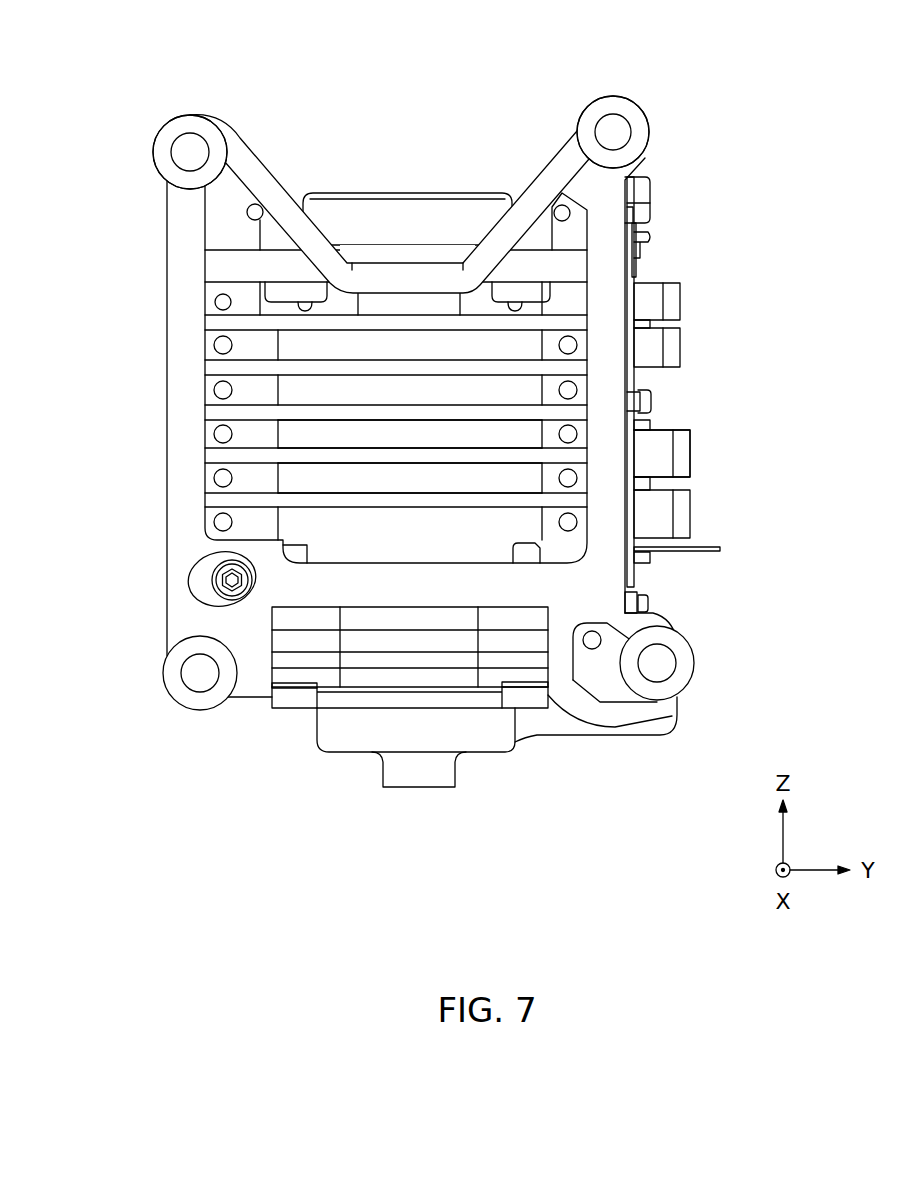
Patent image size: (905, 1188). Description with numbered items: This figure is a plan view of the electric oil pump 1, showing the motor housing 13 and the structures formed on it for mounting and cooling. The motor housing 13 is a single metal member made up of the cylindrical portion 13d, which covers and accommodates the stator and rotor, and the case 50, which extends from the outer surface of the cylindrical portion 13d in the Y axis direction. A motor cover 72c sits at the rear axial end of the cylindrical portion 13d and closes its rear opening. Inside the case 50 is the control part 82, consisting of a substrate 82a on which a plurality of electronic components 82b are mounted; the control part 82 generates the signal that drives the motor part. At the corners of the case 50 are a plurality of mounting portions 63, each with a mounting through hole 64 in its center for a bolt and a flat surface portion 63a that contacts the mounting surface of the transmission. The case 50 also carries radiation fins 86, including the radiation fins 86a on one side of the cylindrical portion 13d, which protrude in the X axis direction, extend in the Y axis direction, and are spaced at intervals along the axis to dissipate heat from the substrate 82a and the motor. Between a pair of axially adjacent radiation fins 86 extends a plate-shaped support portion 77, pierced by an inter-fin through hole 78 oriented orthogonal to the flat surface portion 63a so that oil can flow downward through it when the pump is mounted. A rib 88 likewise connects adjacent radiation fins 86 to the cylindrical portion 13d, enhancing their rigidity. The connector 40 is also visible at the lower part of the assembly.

The electric oil pump 1 is at (712, 98).
The motor housing 13 is at (672, 243).
The cylindrical portion 13d is at (293, 435).
The connector 40 is at (367, 753).
The case 50 is at (182, 348).
The mounting portion 63 is at (167, 118).
The flat surface portion 63a is at (160, 147).
The mounting through hole 64 is at (185, 137).
The motor cover 72c is at (400, 213).
The support portion 77 is at (247, 390).
The inter-fin through hole 78 is at (223, 480).
The control part 82 is at (697, 433).
The substrate 82a is at (627, 267).
The electronic component 82b is at (670, 340).
The radiation fin 86 is at (570, 452).
The radiation fin on +X side 86a is at (573, 497).
The rib 88 is at (533, 520).